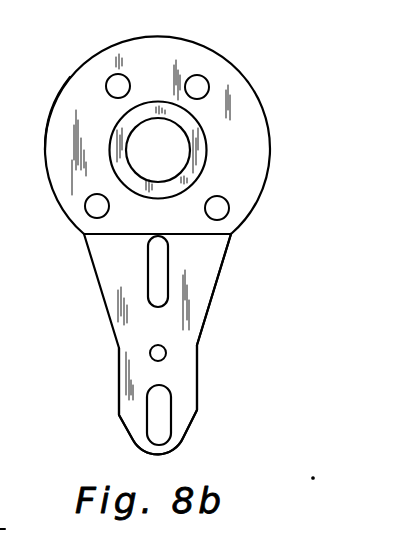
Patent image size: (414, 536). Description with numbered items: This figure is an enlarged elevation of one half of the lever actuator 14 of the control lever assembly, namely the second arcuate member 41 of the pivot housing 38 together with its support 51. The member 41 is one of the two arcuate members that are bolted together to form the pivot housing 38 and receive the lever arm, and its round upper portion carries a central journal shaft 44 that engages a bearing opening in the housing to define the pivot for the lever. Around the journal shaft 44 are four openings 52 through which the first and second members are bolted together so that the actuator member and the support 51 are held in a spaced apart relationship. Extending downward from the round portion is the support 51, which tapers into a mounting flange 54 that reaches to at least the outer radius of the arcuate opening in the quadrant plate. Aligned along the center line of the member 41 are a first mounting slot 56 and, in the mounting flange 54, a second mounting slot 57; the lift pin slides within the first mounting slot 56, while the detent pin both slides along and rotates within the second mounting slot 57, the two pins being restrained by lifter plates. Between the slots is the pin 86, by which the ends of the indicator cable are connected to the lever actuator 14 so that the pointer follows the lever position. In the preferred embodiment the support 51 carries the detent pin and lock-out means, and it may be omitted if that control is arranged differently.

The lever actuator 14 is at (94, 274).
The pivot housing 38 is at (221, 46).
The second arcuate member 41 is at (55, 106).
The journal shaft 44 is at (203, 153).
The support 51 is at (210, 309).
The openings 52 is at (200, 86).
The mounting flange 54 is at (188, 385).
The first mounting slot 56 is at (150, 262).
The second mounting slot 57 is at (163, 413).
The pin 86 is at (166, 352).